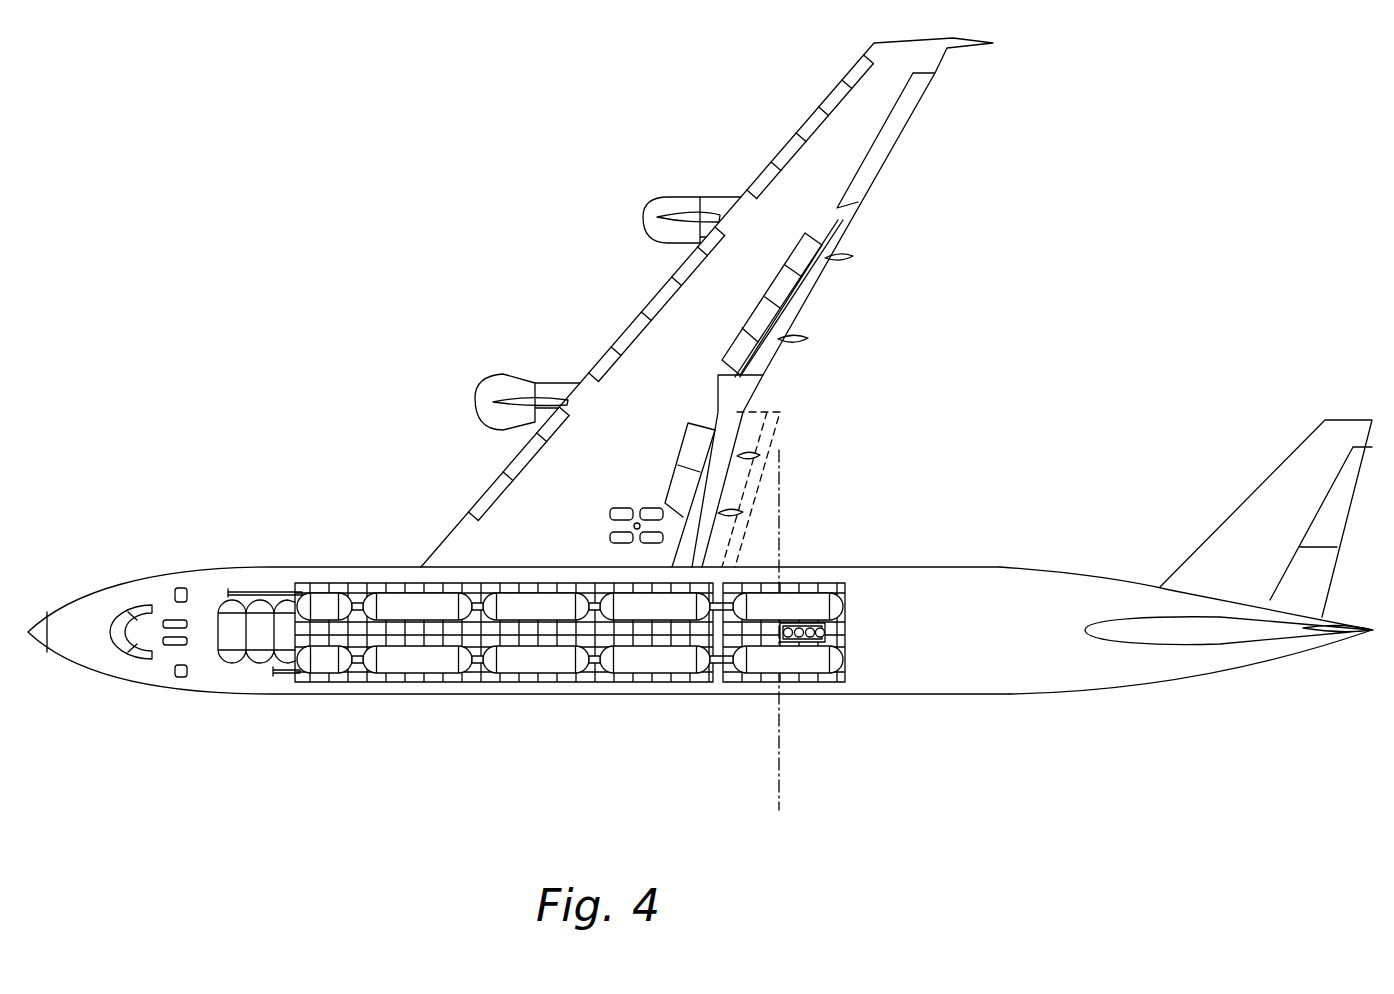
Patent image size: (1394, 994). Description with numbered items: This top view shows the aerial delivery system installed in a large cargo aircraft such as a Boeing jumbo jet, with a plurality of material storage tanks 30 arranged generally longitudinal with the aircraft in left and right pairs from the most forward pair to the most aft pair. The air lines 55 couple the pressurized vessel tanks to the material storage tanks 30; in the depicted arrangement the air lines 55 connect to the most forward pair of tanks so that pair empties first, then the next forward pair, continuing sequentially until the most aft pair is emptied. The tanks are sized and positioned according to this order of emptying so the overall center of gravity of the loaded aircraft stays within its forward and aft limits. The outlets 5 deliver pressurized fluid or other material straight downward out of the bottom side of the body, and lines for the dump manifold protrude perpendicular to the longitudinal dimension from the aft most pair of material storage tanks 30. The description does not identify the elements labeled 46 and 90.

The material storage tank 30 is at (826, 591).
The forward fuel tank 46 is at (256, 668).
The air line 55 is at (284, 675).
The outlet 5 is at (826, 633).
The wing root fairing 90 is at (782, 426).